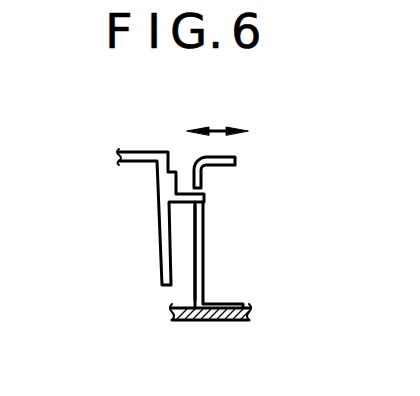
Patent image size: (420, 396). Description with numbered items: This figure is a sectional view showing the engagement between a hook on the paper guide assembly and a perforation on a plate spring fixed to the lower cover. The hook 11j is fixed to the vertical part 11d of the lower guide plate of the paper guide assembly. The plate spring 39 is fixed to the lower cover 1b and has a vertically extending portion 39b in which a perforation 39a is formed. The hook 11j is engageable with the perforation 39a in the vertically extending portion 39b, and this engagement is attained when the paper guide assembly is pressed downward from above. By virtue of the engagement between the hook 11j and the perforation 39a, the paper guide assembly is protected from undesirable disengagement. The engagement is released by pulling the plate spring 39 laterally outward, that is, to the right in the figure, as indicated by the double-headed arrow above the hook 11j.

The vertical part 11d is at (157, 266).
The hook 11j is at (207, 195).
The plate spring 39 is at (247, 256).
The perforation 39a is at (205, 209).
The vertically extending portion 39b is at (205, 253).
The lower cover 1b is at (190, 322).